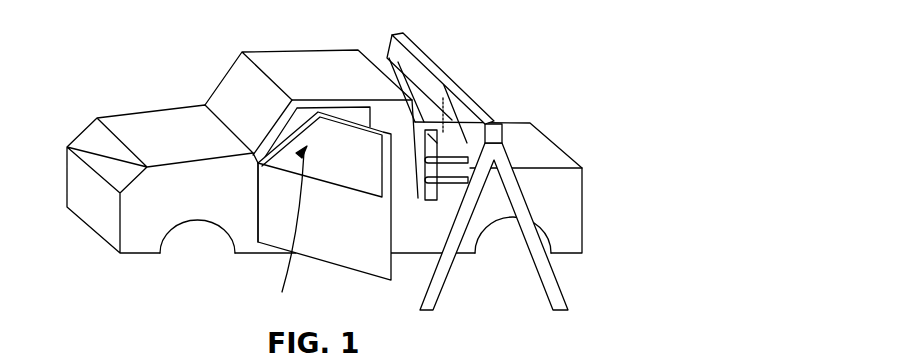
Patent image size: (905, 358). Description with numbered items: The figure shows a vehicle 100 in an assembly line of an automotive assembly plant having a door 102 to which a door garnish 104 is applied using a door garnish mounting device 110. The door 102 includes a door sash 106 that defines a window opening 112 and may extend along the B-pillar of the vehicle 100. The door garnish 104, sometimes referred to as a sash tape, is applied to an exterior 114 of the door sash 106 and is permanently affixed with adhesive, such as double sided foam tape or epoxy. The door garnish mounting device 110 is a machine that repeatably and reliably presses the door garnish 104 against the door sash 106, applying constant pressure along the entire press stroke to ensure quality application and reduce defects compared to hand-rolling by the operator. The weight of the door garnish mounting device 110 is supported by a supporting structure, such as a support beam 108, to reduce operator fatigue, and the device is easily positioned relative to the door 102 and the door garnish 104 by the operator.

The vehicle 100 is at (144, 74).
The door 102 is at (359, 228).
The door garnish 104 is at (387, 137).
The door sash 106 is at (392, 187).
The support beam 108 is at (448, 83).
The door garnish mounting device 110 is at (457, 157).
The window opening 112 is at (258, 165).
The exterior 114 is at (284, 232).